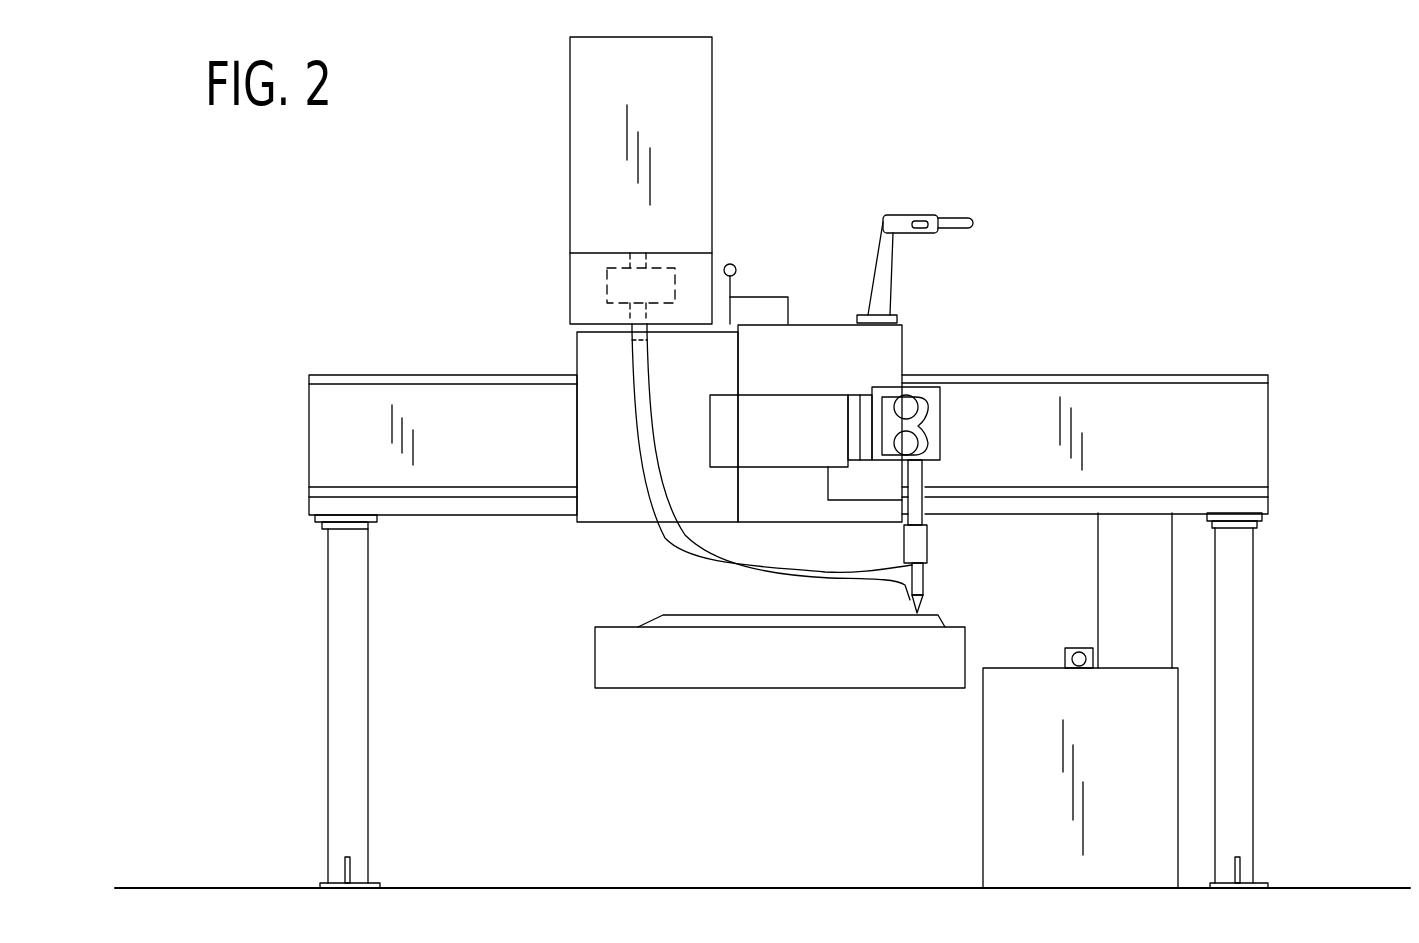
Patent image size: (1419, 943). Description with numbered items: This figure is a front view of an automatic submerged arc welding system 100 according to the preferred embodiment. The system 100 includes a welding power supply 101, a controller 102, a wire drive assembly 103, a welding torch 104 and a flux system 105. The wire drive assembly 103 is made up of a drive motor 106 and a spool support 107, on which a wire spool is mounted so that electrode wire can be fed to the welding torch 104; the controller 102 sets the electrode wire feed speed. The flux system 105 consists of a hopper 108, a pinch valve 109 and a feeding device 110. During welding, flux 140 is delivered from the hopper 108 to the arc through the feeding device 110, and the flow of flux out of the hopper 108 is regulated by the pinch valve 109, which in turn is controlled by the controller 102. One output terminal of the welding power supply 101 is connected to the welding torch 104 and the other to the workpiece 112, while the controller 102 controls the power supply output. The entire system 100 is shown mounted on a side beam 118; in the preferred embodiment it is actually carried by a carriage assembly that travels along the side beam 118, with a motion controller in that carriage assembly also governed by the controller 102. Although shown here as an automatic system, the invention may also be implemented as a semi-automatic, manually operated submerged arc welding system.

The automatic submerged arc welding system 100 is at (938, 76).
The welding power supply 101 is at (983, 742).
The controller 102 is at (566, 344).
The wire drive assembly 103 is at (920, 318).
The welding torch 104 is at (927, 523).
The flux system 105 is at (560, 92).
The drive motor 106 is at (920, 385).
The spool support 107 is at (992, 212).
The hopper 108 is at (712, 70).
The pinch valve 109 is at (600, 278).
The feeding device 110 is at (670, 541).
The workpiece 112 is at (595, 653).
The side beam 118 is at (1172, 374).
The flux 140 is at (690, 612).